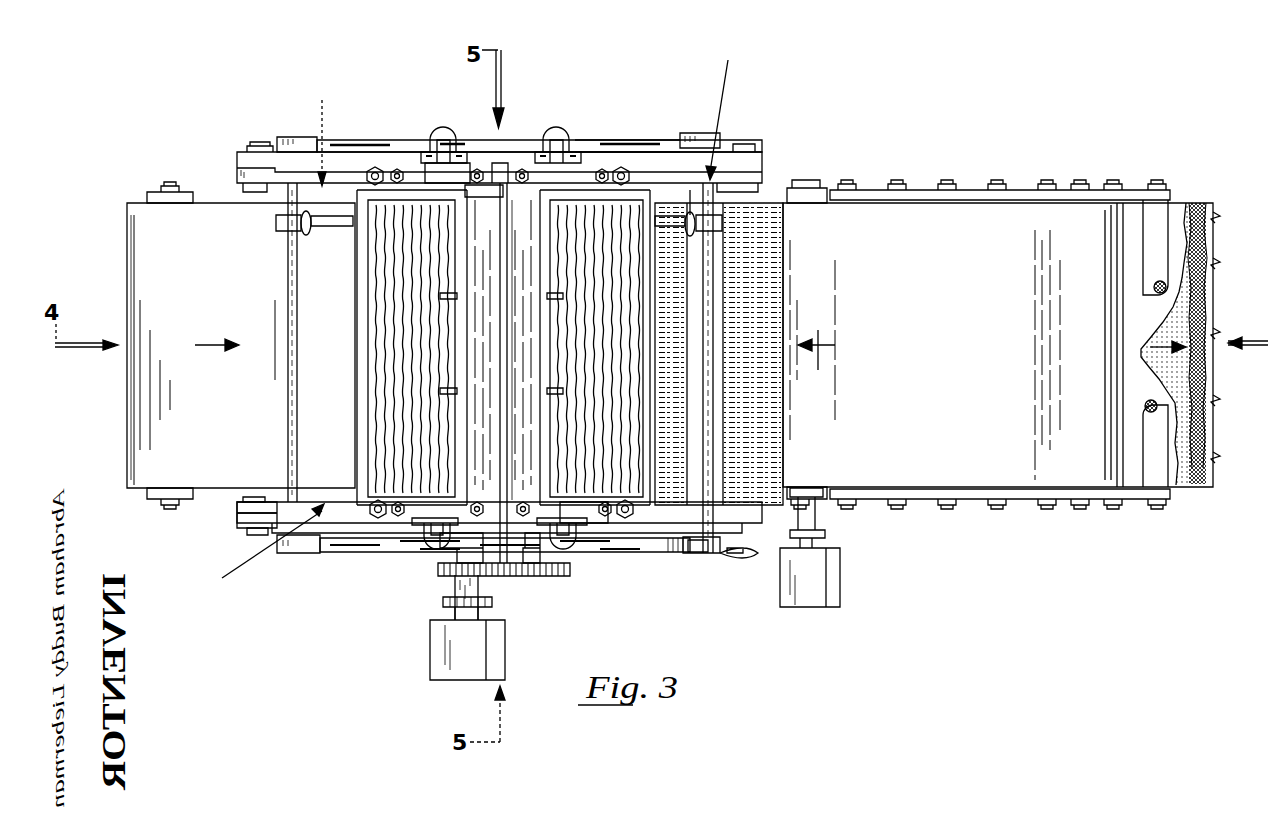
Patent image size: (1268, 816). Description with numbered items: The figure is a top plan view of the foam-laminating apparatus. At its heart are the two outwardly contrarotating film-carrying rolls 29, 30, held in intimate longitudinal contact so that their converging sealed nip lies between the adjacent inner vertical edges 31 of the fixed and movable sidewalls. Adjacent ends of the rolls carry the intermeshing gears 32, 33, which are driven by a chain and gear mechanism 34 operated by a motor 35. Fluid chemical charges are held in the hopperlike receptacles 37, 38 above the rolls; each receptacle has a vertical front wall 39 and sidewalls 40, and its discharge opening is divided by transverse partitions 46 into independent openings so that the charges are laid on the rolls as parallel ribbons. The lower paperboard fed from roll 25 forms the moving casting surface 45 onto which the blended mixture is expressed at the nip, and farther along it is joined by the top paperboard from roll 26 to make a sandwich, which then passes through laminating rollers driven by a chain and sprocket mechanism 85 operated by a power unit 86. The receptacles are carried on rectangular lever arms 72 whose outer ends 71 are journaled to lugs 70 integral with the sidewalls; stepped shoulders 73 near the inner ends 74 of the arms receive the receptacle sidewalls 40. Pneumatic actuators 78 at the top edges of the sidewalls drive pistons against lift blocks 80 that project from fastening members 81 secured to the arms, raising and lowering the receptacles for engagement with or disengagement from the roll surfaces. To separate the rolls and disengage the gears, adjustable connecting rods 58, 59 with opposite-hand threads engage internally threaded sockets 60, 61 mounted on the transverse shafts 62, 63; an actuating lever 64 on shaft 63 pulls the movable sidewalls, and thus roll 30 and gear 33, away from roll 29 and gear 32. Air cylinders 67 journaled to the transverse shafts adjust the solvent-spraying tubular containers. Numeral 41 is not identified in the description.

The roll of paperboard 25 is at (127, 437).
The roll of paperboard 26 is at (912, 228).
The contrarotating film-carrying roll 29 is at (499, 447).
The contrarotating film-carrying roll 30 is at (540, 433).
The inner vertical edges 31 is at (483, 168).
The intermeshing gear 32 is at (438, 575).
The intermeshing gear 33 is at (520, 580).
The chain and gear mechanism 34 is at (443, 602).
The motor 35 is at (460, 650).
The receptacle 37 is at (396, 345).
The receptacle 38 is at (639, 180).
The vertical front wall 39 is at (463, 214).
The sidewalls of receptacle 40 is at (602, 168).
The screen frame 41 is at (357, 396).
The casting surface 45 is at (228, 235).
The transverse partition 46 is at (451, 298).
The adjustable connecting rod 58 is at (620, 545).
The adjustable connecting rod 59 is at (402, 140).
The internally threaded socket 60 is at (302, 137).
The internally threaded socket 61 is at (696, 205).
The transverse shaft 62 is at (297, 305).
The transverse shaft 63 is at (706, 268).
The actuating lever 64 is at (748, 573).
The air cylinder 67 is at (332, 232).
The lug 70 is at (255, 520).
The outer end of lever arm 71 is at (236, 505).
The lever arm 72 is at (475, 331).
The stepped shoulder 73 is at (432, 175).
The inner end of lever arm 74 is at (536, 152).
The pneumatic actuator 78 is at (557, 128).
The lift block 80 is at (566, 128).
The fastening member 81 is at (583, 140).
The chain and sprocket mechanism 85 is at (837, 523).
The power unit 86 is at (835, 577).